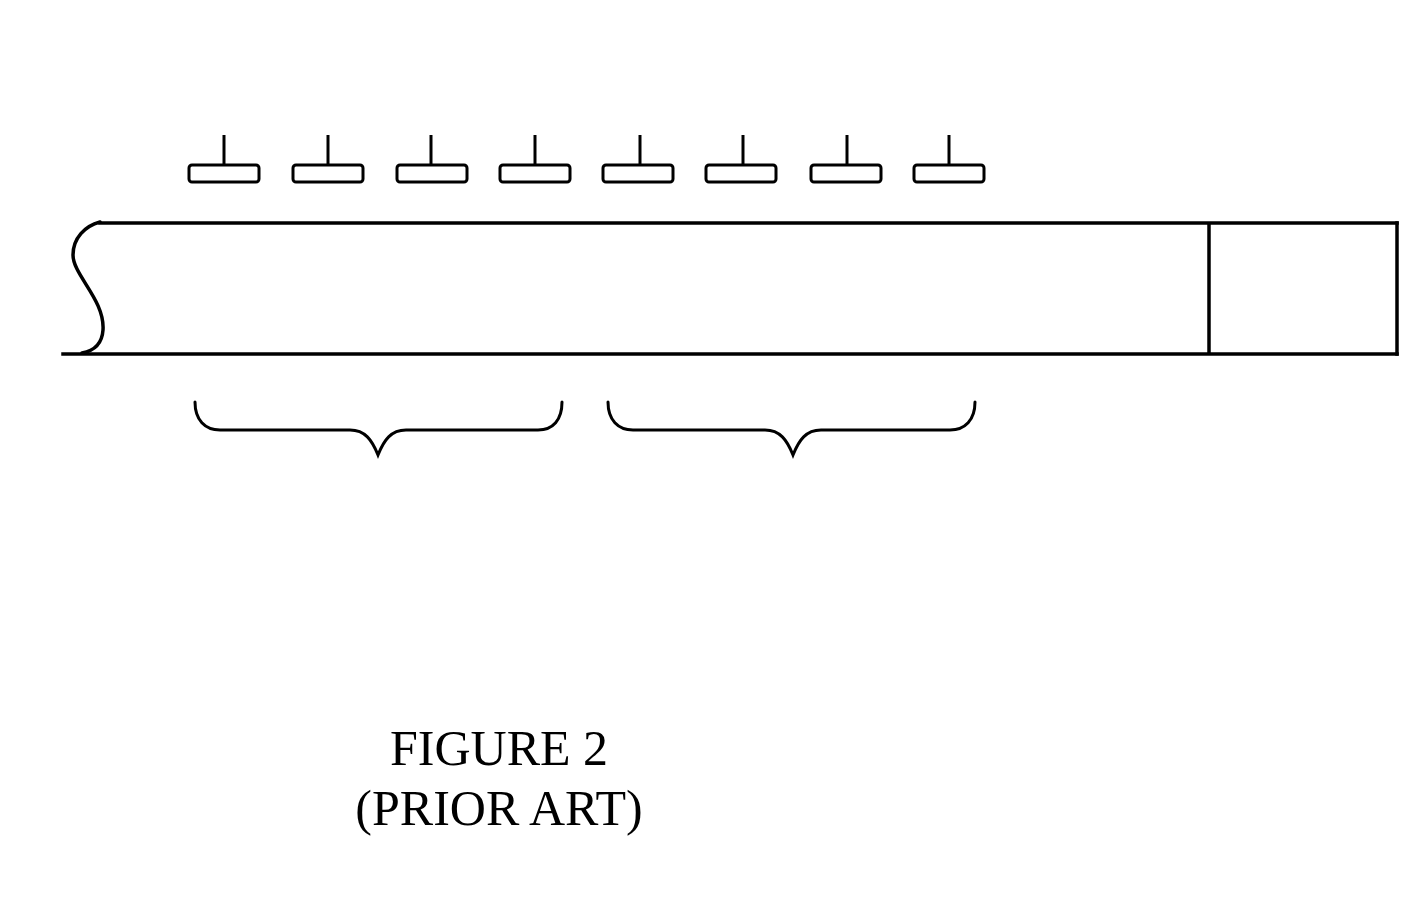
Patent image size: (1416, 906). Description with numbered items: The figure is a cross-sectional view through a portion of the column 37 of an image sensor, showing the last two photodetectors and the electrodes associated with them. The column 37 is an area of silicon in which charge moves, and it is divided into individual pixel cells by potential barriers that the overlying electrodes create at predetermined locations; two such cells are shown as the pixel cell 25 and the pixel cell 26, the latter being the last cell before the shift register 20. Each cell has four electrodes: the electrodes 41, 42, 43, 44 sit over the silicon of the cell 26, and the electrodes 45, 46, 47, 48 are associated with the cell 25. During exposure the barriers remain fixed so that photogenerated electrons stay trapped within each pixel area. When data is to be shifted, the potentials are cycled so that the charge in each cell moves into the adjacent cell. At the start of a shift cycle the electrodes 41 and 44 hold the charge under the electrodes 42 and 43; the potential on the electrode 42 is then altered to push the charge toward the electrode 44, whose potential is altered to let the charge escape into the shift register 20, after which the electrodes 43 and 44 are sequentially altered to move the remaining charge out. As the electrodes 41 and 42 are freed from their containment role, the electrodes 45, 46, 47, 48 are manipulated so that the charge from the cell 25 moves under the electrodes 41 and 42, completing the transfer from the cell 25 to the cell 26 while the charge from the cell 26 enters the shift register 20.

The shift register 20 is at (1302, 357).
The column 37 is at (128, 340).
The pixel cell 25 is at (378, 462).
The pixel cell 26 is at (791, 462).
The electrode 41 is at (611, 165).
The electrode 42 is at (722, 165).
The electrode 43 is at (831, 165).
The electrode 44 is at (914, 165).
The electrode 45 is at (200, 165).
The electrode 46 is at (303, 165).
The electrode 47 is at (396, 165).
The electrode 48 is at (512, 165).